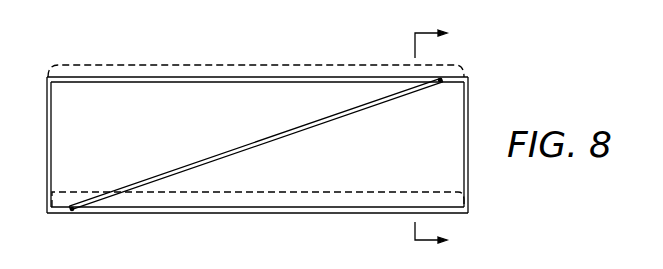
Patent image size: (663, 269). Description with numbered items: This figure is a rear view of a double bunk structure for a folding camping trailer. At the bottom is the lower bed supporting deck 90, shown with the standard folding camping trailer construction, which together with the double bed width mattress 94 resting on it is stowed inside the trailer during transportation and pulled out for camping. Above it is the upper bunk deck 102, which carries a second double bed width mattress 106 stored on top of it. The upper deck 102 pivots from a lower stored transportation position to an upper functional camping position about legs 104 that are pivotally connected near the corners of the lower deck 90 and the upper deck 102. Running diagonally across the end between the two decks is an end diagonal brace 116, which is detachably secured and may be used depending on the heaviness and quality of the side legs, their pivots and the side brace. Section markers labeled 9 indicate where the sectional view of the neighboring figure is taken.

The bottom bed supporting deck 90 is at (293, 213).
The double bed width mattress 94 is at (357, 192).
The upper bunk deck 102 is at (170, 84).
The legs 104 is at (52, 139).
The double bed width mattress 106 is at (256, 65).
The end diagonal brace 116 is at (282, 144).
The section line 9- 9 is at (437, 138).